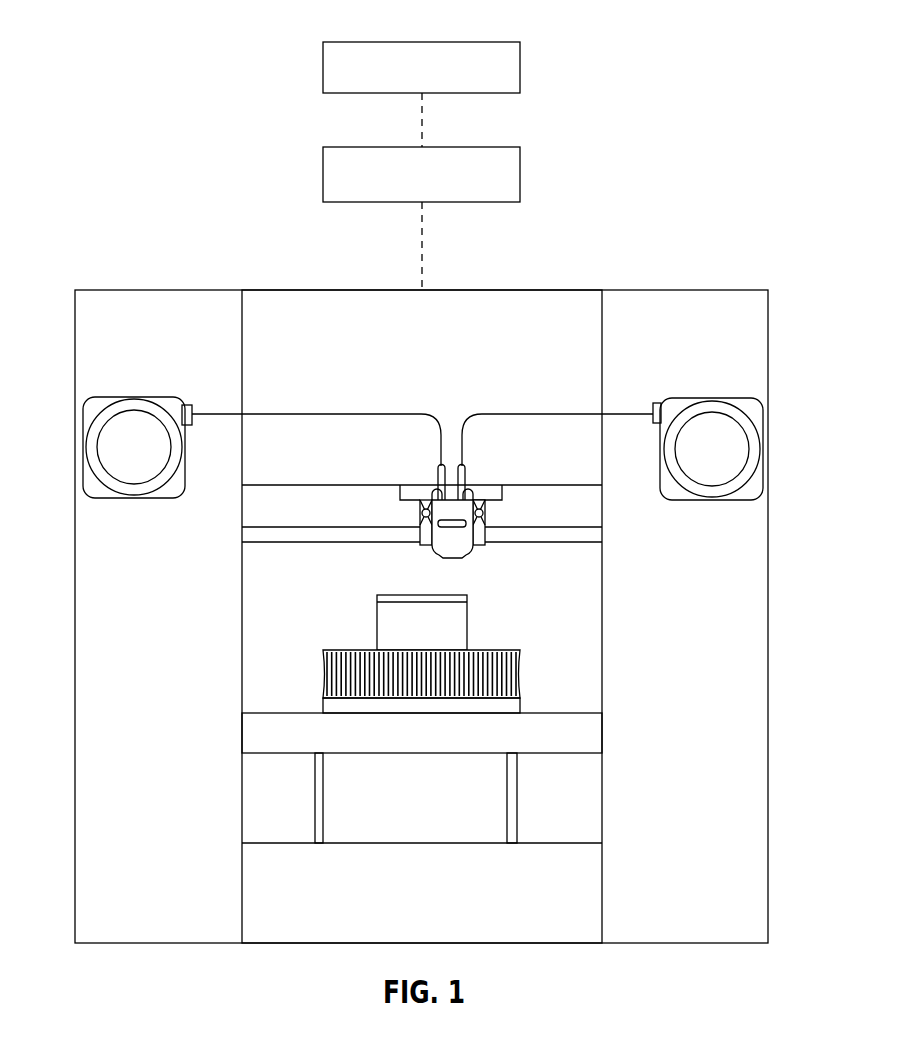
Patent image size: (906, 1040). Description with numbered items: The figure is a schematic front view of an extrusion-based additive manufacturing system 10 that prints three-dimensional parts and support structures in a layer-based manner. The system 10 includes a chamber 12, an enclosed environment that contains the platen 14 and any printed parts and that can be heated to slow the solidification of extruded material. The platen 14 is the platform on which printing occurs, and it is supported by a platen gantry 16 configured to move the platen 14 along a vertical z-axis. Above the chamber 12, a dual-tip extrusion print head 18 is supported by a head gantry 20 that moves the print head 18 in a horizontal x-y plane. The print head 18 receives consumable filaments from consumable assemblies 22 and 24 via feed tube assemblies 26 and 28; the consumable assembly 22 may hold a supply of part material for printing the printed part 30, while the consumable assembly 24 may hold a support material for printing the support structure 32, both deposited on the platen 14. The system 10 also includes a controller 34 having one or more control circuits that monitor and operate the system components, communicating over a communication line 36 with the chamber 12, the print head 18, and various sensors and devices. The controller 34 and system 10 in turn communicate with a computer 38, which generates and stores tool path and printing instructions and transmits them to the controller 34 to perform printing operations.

The additive manufacturing system 10 is at (124, 72).
The chamber 12 is at (252, 683).
The platen 14 is at (590, 733).
The platen gantry 16 is at (524, 795).
The print head 18 is at (493, 515).
The head gantry 20 is at (310, 527).
The consumable assembly 22 is at (135, 397).
The consumable assembly 24 is at (680, 398).
The feed tube assembly 26 is at (305, 413).
The feed tube assembly 28 is at (570, 413).
The printed part 30 is at (375, 622).
The support structure 32 is at (522, 705).
The controller 34 is at (520, 178).
The communication line 36 is at (422, 270).
The computer 38 is at (520, 68).